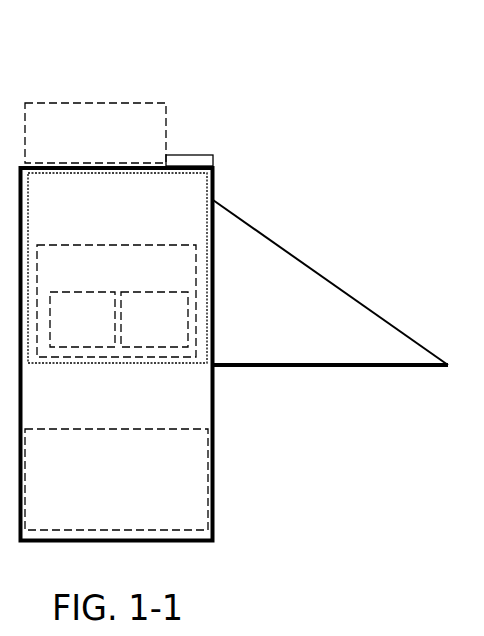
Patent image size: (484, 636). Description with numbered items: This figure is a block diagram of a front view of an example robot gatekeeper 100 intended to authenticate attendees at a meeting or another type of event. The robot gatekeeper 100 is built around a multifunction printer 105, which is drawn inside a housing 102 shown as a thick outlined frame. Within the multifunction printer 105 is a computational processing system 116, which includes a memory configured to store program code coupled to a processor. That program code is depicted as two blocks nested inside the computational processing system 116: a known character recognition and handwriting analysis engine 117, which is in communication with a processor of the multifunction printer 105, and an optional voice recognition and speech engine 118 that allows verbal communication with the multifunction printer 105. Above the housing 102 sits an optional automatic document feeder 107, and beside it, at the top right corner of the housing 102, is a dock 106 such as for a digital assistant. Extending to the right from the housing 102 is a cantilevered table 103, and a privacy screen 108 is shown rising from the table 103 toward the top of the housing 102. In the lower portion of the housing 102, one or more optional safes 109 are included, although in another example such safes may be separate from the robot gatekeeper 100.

The robot gatekeeper 100 is at (338, 54).
The housing 102 is at (213, 502).
The cantilevered table 103 is at (277, 367).
The multifunction printer 105 is at (117, 268).
The dock 106 is at (213, 155).
The automatic document feeder 107 is at (95, 133).
The privacy screen 108 is at (330, 282).
The safe(s) 109 is at (116, 479).
The computational processing system 116 is at (116, 301).
The character recognition and handwriting analysis engine 117 is at (82, 319).
The voice recognition and speech engine 118 is at (154, 319).